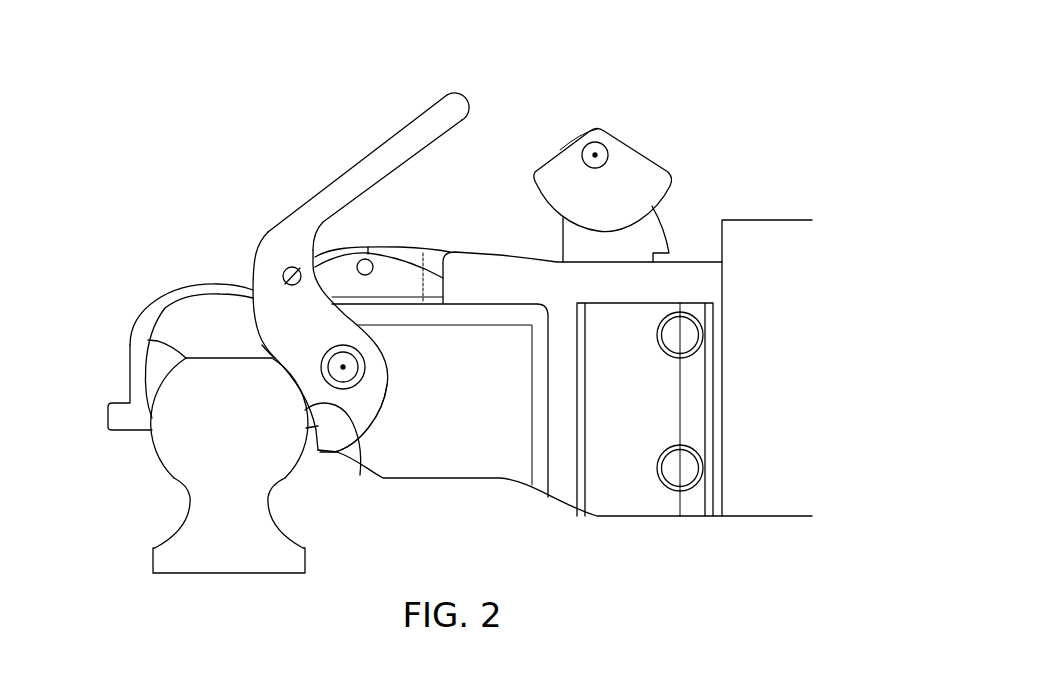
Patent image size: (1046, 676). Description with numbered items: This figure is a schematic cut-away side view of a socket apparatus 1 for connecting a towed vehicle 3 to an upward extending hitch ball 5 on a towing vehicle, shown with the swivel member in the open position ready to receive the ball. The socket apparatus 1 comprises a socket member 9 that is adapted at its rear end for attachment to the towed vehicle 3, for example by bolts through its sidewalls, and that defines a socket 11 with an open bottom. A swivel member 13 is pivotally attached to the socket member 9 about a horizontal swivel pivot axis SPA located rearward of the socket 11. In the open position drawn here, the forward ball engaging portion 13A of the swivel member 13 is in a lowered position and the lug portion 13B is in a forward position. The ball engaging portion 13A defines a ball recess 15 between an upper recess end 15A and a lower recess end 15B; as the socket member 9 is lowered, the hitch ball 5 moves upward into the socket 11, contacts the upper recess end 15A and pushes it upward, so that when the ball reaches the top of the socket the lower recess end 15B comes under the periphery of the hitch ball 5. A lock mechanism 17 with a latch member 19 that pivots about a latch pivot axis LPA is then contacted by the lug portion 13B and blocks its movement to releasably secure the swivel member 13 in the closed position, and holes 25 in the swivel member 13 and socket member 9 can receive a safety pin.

The socket apparatus 1 is at (574, 89).
The towed vehicle 3 is at (785, 220).
The hitch ball 5 is at (150, 341).
The socket member 9 is at (607, 516).
The socket 11 is at (193, 315).
The swivel member 13 is at (267, 233).
The ball engaging portion 13A is at (366, 434).
The lug portion 13B is at (418, 153).
The ball recess 15 is at (360, 478).
The upper recess end 15A is at (270, 360).
The lower recess end 15B is at (320, 452).
The lock mechanism 17 is at (636, 118).
The latch member 19 is at (648, 157).
The holes 25 is at (376, 267).
The latch pivot axis LPA is at (595, 155).
The swivel pivot axis SPA is at (343, 367).